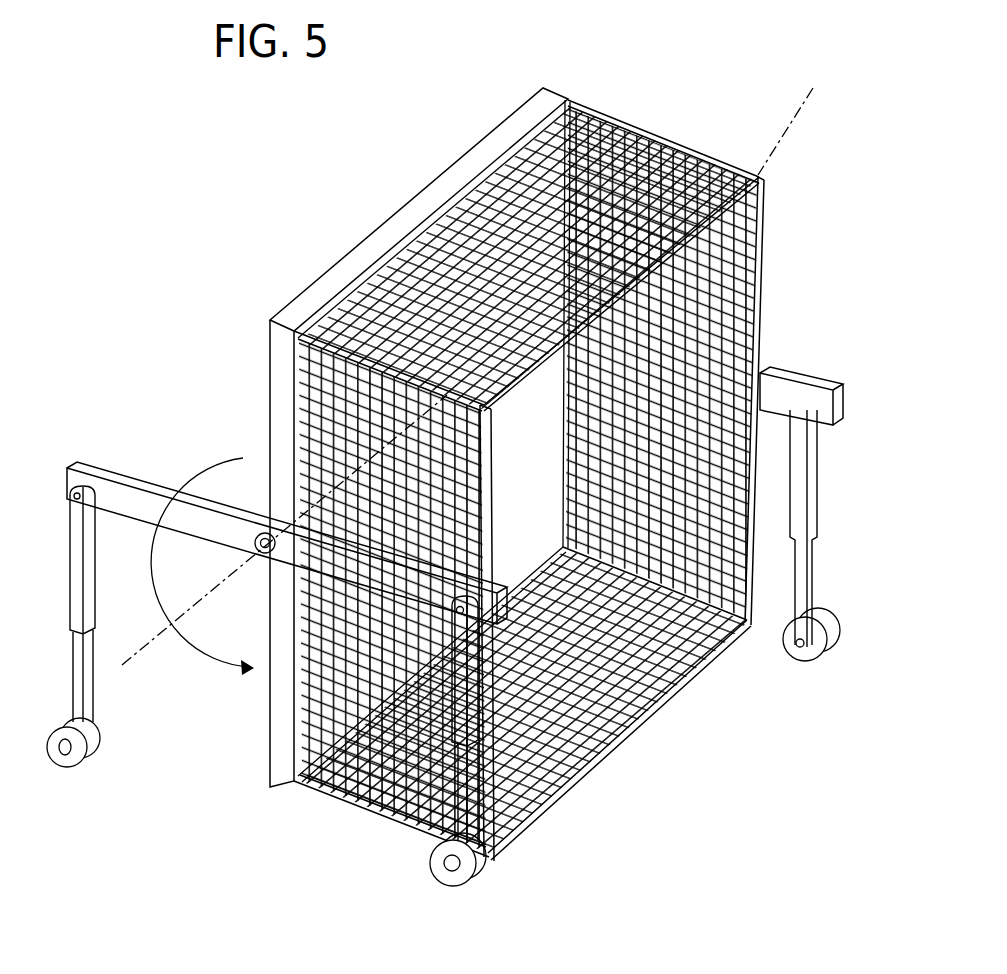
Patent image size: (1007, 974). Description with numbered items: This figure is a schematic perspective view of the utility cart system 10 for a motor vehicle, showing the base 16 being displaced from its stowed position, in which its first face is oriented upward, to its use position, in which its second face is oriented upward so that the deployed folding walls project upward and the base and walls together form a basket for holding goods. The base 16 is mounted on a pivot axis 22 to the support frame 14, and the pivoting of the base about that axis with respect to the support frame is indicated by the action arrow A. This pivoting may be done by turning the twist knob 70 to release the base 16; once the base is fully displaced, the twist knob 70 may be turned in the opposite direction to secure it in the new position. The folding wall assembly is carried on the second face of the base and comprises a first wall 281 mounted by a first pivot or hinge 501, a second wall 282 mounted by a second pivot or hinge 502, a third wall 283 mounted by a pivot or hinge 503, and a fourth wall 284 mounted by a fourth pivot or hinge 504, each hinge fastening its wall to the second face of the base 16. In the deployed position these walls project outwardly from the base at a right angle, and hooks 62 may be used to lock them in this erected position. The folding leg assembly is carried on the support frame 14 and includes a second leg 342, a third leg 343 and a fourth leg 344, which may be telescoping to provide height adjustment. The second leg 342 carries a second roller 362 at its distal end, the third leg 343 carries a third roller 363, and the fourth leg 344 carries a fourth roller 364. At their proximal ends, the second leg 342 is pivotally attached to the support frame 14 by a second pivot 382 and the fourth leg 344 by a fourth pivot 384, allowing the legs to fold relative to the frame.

The utility cart system 10 is at (184, 229).
The support frame 14 is at (132, 482).
The base 16 is at (312, 273).
The pivot axis 22 is at (780, 112).
The first wall 281 is at (764, 272).
The second wall 282 is at (617, 745).
The third wall 283 is at (493, 443).
The fourth wall 284 is at (527, 187).
The first pivot or hinge 501 is at (553, 440).
The second pivot or hinge 502 is at (524, 566).
The pivot or hinge 503 is at (280, 707).
The fourth pivot or hinge 504 is at (400, 245).
The second leg 342 is at (93, 557).
The third leg 343 is at (813, 518).
The fourth leg 344 is at (567, 788).
The second roller 362 is at (65, 765).
The third roller 363 is at (828, 652).
The fourth roller 364 is at (440, 874).
The second pivot 382 is at (75, 492).
The fourth pivot 384 is at (452, 608).
The hooks 62 is at (761, 172).
The twist knob 70 is at (255, 544).
The action arrow A is at (207, 647).